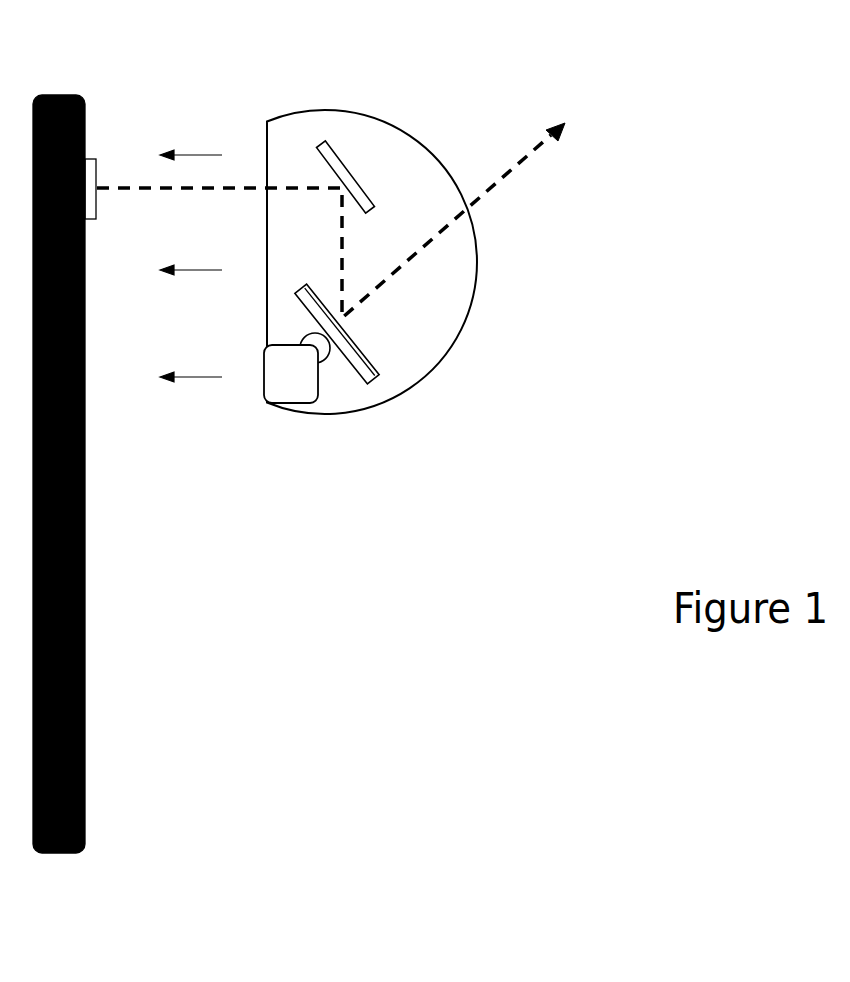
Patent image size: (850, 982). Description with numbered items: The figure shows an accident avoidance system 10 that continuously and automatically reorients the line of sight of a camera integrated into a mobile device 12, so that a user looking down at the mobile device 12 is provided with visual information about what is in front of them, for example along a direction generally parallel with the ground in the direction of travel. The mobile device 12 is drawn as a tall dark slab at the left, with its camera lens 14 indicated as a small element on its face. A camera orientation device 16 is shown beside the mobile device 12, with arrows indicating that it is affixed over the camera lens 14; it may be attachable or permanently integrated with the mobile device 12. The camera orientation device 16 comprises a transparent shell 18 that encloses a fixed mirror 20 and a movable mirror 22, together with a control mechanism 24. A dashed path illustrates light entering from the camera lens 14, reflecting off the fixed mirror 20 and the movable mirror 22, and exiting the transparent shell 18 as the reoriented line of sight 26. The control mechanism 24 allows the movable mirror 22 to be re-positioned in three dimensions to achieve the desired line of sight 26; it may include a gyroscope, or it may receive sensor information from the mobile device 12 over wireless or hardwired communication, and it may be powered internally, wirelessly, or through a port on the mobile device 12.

The accident avoidance system 10 is at (362, 321).
The mobile device 12 is at (85, 617).
The camera lens 14 is at (97, 160).
The camera orientation device 16 is at (362, 256).
The transparent shell 18 is at (412, 130).
The fixed mirror 20 is at (337, 150).
The movable mirror 22 is at (352, 381).
The control mechanism 24 is at (281, 391).
The line of sight 26 is at (510, 185).